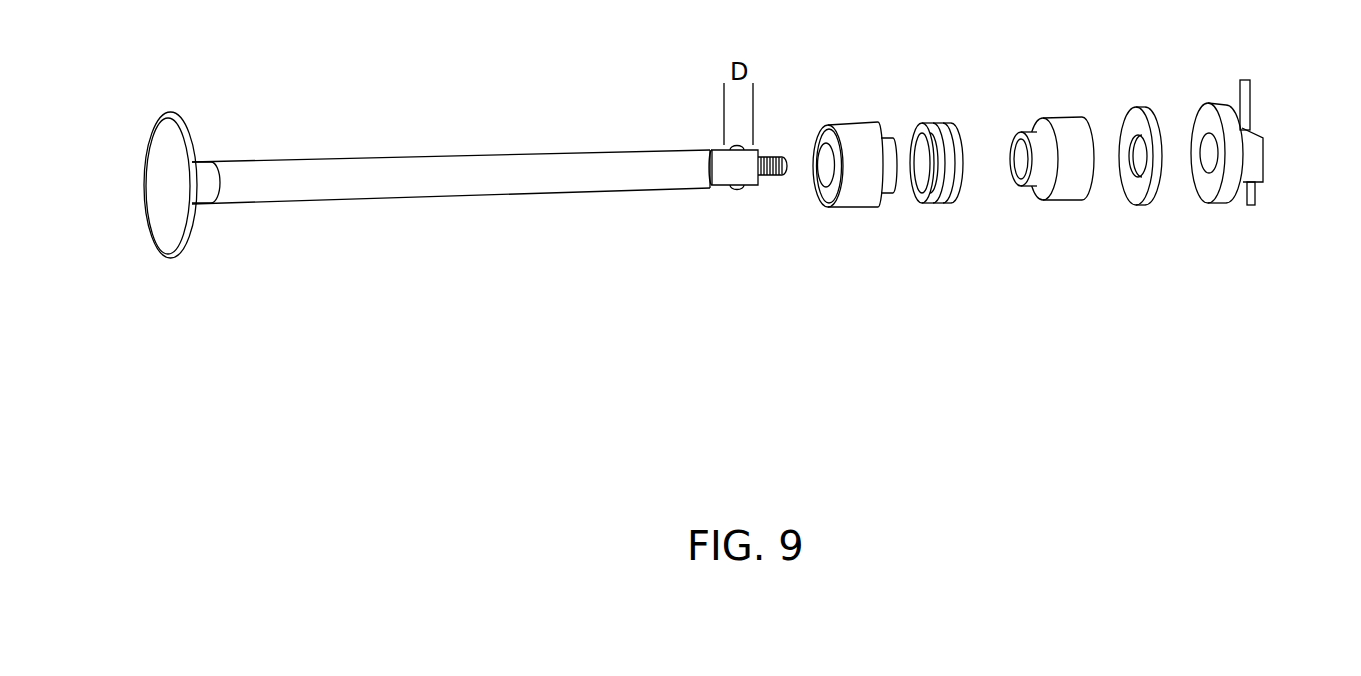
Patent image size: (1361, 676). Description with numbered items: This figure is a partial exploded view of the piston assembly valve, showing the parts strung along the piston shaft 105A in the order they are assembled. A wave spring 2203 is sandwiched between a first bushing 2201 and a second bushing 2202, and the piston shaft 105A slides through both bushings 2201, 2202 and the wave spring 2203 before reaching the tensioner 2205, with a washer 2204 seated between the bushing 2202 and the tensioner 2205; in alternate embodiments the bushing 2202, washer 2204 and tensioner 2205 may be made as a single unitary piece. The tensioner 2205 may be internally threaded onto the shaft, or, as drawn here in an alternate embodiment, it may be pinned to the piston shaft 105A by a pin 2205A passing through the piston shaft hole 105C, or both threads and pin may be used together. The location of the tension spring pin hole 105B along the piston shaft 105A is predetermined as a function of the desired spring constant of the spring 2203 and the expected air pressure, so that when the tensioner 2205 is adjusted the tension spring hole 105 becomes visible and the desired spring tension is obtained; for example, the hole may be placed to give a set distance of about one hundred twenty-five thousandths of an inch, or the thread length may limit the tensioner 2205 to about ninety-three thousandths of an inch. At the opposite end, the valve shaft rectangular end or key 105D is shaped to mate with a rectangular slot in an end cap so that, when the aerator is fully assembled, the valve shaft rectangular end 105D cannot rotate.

The tension spring hole 105 is at (156, 193).
The piston shaft 105A is at (451, 146).
The tension spring pin hole 105B is at (818, 270).
The piston shaft hole 105C is at (708, 204).
The valve shaft rectangular end 105D is at (780, 122).
The bushing 2201 is at (855, 205).
The bushing 2202 is at (1055, 200).
The wave spring 2203 is at (964, 129).
The washer 2204 is at (1164, 121).
The tensioner 2205 is at (1263, 148).
The pin 2205A is at (1288, 109).